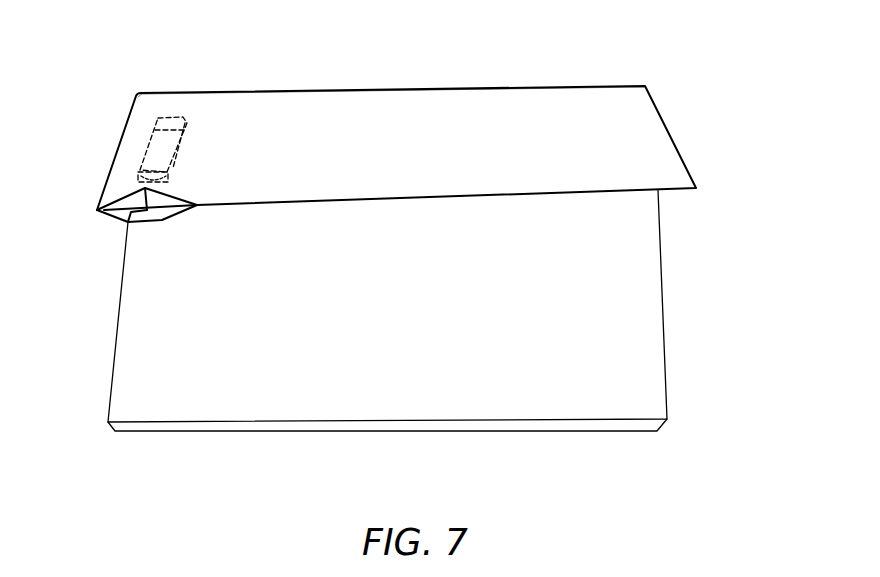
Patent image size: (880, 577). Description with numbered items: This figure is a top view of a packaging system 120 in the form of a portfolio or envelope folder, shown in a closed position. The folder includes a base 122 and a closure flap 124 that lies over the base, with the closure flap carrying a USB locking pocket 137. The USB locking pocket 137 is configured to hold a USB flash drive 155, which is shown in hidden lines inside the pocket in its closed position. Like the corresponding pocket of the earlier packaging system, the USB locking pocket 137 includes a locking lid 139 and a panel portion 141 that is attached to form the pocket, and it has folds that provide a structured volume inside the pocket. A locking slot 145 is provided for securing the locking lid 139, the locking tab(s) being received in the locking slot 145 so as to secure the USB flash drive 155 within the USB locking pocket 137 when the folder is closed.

The packaging system 120 is at (130, 52).
The base 122 is at (688, 311).
The closure flap 124 is at (694, 115).
The USB locking pocket 137 is at (128, 125).
The locking lid 139 is at (100, 209).
The panel portion 141 is at (115, 218).
The locking slot 145 is at (128, 225).
The USB flash drive 155 is at (180, 113).